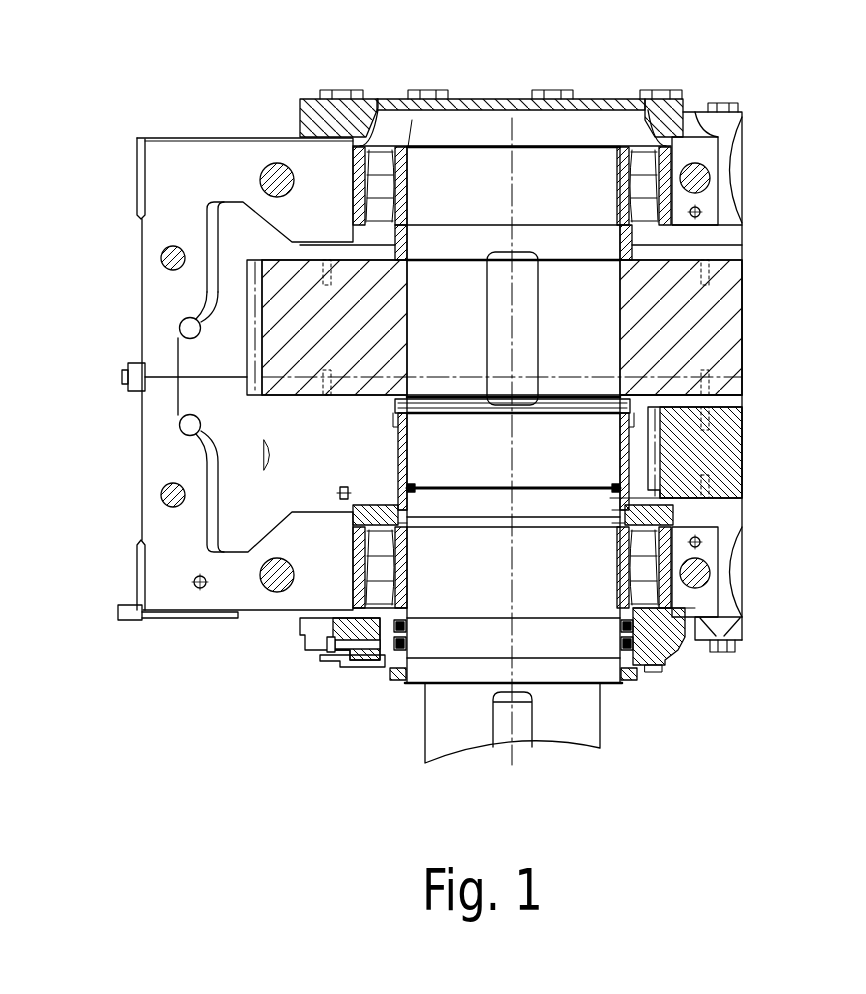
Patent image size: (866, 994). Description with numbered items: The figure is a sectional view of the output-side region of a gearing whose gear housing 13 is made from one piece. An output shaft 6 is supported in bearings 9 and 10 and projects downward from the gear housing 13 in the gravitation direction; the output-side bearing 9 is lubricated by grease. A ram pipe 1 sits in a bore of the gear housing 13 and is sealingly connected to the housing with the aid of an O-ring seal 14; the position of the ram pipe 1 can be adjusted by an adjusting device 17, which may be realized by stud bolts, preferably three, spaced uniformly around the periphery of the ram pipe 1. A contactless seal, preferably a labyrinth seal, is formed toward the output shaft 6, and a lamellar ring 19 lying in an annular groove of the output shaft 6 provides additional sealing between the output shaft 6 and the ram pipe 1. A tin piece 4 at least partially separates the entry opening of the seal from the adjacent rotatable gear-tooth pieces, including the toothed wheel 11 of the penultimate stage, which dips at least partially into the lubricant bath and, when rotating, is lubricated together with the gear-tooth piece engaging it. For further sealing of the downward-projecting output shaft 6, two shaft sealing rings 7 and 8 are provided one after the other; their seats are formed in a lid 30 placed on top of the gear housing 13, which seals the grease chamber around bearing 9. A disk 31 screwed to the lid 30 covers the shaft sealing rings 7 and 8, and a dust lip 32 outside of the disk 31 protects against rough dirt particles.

The ram pipe 1 is at (630, 467).
The tin piece 4 is at (632, 432).
The output shaft 6 is at (547, 583).
The shaft sealing ring 7 is at (625, 633).
The shaft sealing ring 8 is at (662, 668).
The bearing 9 is at (647, 547).
The bearing 10 is at (647, 165).
The toothed wheel 11 is at (733, 460).
The gear housing 13 is at (328, 118).
The O-ring seal 14 is at (612, 520).
The adjusting device 17 is at (340, 492).
The lamellar ring 19 is at (457, 490).
The lid 30 is at (342, 627).
The disk 31 is at (358, 665).
The dust lip 32 is at (397, 677).